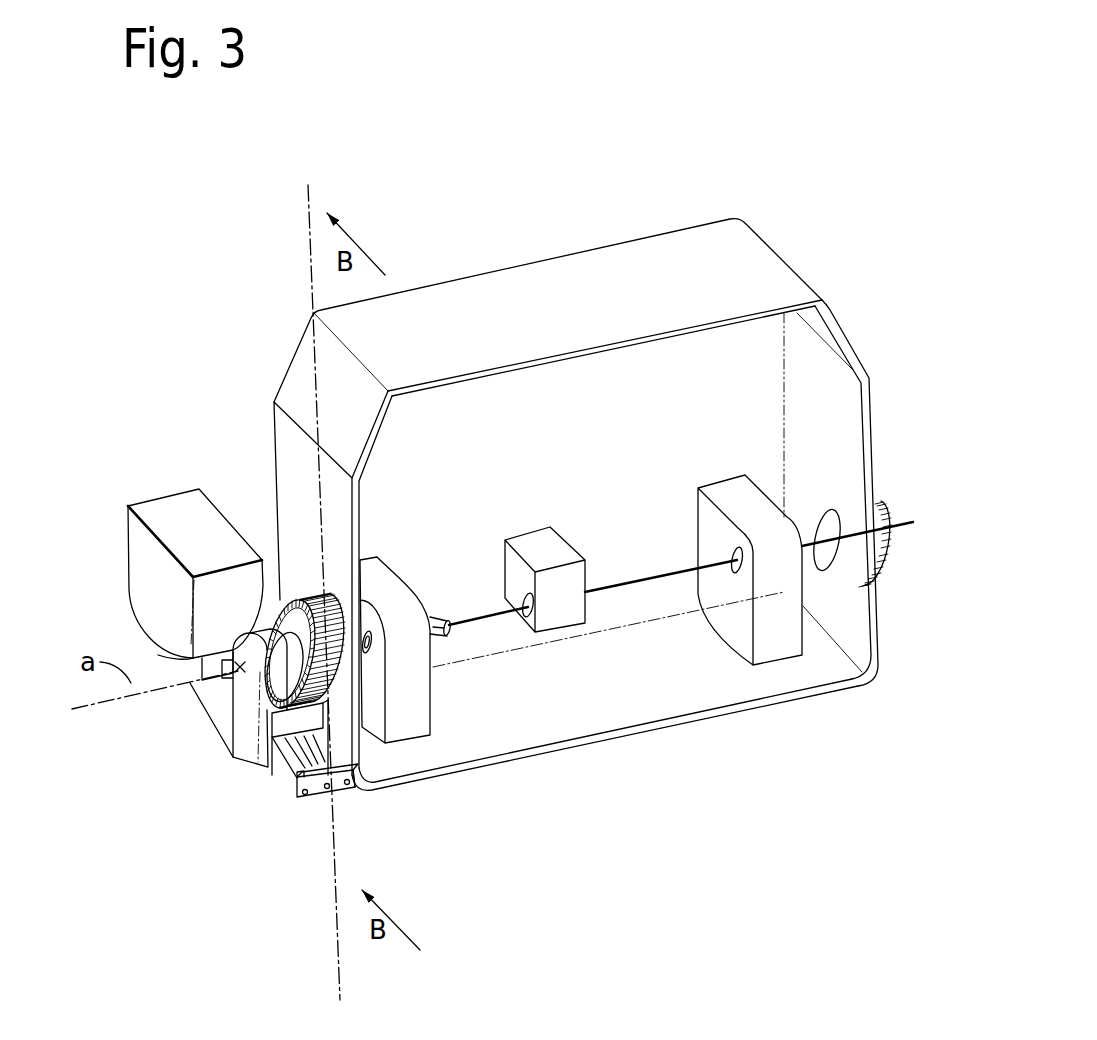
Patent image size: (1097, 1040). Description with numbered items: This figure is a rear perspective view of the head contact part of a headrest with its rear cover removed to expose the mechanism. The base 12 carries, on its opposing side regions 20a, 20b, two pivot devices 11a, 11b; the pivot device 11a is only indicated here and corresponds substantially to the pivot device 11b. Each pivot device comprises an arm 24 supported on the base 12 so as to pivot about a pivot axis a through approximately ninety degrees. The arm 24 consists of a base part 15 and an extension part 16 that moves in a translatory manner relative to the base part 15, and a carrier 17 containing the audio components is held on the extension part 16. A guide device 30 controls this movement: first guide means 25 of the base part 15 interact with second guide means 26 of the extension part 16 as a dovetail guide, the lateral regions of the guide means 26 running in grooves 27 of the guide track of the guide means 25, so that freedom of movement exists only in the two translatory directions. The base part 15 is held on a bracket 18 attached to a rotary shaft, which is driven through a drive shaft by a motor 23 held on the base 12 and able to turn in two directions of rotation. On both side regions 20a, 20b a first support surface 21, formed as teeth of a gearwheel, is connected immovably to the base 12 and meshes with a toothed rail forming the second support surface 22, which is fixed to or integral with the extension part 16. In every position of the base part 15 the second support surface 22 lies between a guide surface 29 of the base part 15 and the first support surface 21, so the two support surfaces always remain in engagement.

The base 12 is at (672, 253).
The side region 20a is at (882, 427).
The side region 20b is at (262, 430).
The pivot device 11a is at (905, 493).
The pivot device 11b is at (187, 657).
The carrier 17 is at (151, 540).
The first support surface 21 is at (294, 597).
The arm 24 is at (112, 545).
The bracket 18 is at (228, 703).
The second support surface 22 is at (268, 705).
The extension part 16 is at (263, 765).
The second guide means 26 is at (280, 782).
The base part 15 is at (312, 876).
The grooves 27 is at (297, 800).
The first guide means 25 is at (313, 778).
The guide surface 29 is at (292, 740).
The guide device 30 is at (338, 726).
The motor 23 is at (567, 622).